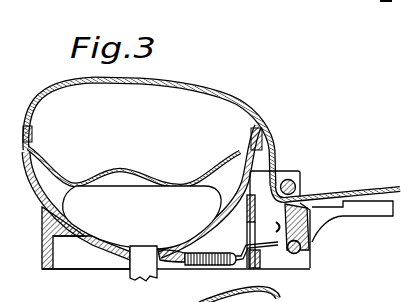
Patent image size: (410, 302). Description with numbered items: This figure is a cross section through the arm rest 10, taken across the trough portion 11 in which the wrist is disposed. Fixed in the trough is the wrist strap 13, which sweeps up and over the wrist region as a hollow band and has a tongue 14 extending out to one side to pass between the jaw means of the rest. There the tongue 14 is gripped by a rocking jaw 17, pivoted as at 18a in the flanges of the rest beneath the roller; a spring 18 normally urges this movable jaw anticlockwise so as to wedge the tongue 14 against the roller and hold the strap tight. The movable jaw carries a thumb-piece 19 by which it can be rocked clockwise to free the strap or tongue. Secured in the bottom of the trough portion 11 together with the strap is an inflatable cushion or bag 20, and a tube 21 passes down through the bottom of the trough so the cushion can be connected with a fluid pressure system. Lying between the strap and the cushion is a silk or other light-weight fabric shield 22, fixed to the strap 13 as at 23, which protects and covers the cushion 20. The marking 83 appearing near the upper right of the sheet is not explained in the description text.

The arm rest 10 is at (292, 148).
The trough portion 11 is at (88, 249).
The wrist strap 13 is at (219, 89).
The tongue 14 is at (345, 191).
The rocking jaw 17 is at (308, 242).
The spring 18 is at (203, 268).
The pivot 18a is at (302, 255).
The thumb-piece 19 is at (384, 218).
The inflatable cushion or bag 20 is at (148, 200).
The tube 21 is at (133, 277).
The shield 22 is at (88, 183).
The fixing of shield to strap 23 is at (34, 142).
The annotation 83 is at (406, 87).